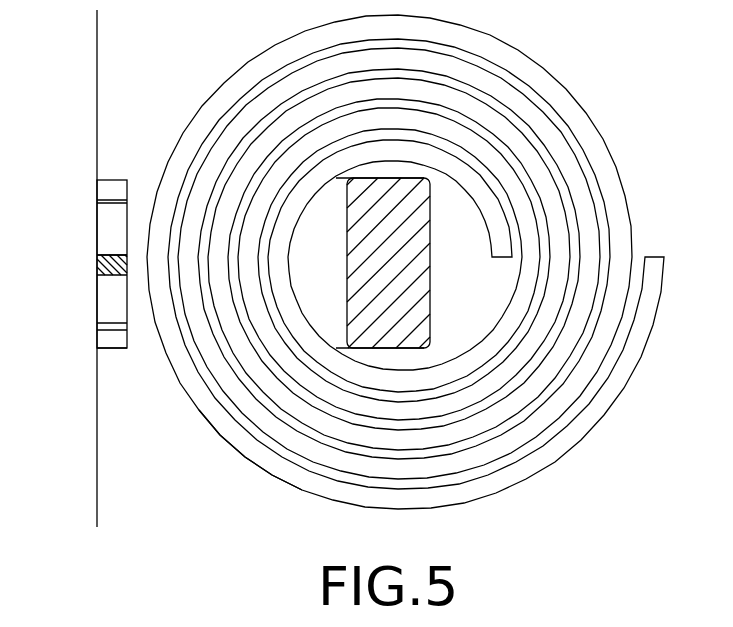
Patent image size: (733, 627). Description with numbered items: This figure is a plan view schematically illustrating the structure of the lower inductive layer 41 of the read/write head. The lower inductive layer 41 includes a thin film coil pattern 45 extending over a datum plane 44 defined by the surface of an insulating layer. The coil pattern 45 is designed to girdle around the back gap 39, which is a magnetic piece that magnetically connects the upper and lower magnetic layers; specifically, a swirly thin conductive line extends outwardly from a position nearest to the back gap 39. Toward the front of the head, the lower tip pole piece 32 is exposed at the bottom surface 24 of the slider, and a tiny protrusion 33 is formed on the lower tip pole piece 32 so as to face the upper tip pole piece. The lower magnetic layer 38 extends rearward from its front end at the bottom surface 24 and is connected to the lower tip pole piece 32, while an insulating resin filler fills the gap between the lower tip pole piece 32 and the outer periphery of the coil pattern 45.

The bottom surface 24 is at (95, 52).
The lower tip pole piece 32 is at (95, 232).
The tiny protrusion 33 is at (97, 268).
The lower magnetic layer 38 is at (95, 342).
The back gap 39 is at (430, 257).
The lower inductive layer 41 is at (595, 502).
The datum plane 44 is at (183, 65).
The thin film coil pattern 45 is at (280, 482).